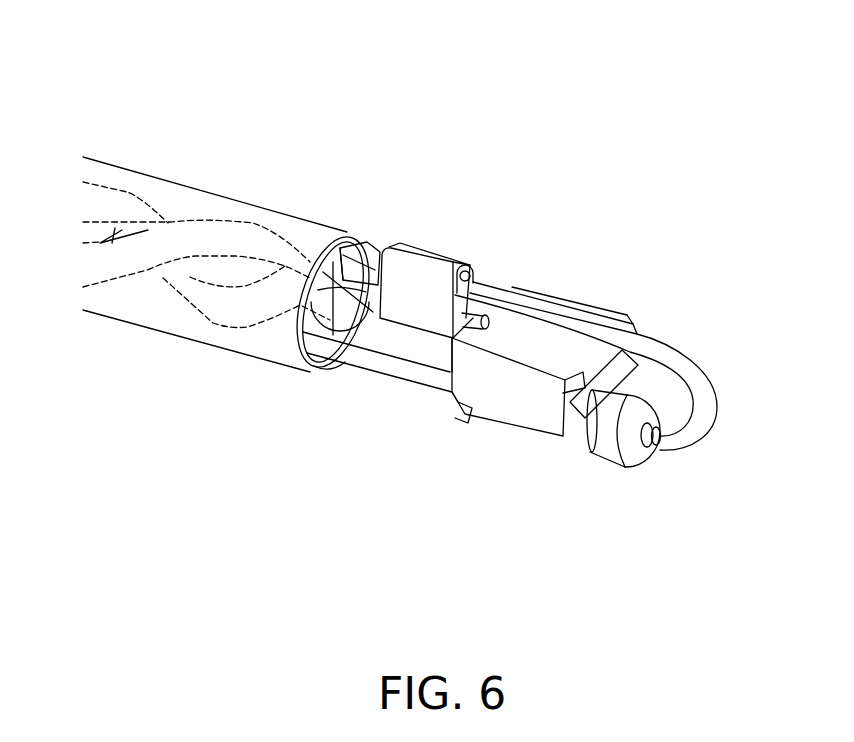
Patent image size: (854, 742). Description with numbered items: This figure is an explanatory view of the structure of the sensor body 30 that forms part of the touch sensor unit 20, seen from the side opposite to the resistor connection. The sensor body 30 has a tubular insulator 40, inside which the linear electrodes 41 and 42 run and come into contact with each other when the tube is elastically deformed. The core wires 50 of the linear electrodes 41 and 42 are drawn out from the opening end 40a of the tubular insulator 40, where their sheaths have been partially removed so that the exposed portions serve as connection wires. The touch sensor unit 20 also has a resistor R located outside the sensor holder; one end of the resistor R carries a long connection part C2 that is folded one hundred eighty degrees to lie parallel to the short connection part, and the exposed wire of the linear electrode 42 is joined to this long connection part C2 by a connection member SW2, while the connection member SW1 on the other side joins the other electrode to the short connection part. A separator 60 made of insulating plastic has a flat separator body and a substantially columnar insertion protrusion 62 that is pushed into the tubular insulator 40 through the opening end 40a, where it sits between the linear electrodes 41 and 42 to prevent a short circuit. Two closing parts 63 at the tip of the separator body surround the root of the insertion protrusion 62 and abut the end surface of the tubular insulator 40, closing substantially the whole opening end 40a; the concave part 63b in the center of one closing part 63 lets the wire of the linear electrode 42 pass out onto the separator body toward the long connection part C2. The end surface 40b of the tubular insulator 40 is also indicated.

The touch sensor unit 20 is at (152, 56).
The sensor body 30 is at (665, 258).
The tubular insulator 40 is at (126, 322).
The opening end 40a is at (332, 245).
The end surface 40b is at (329, 366).
The linear electrode 41 is at (254, 224).
The linear electrode 42 is at (220, 320).
The core wire 50 is at (374, 352).
The separator 60 is at (510, 433).
The insertion protrusion 62 is at (197, 272).
The closing part 63 is at (310, 372).
The concave part 63b is at (370, 257).
The connection member SW1 is at (447, 423).
The connection member SW2 is at (450, 259).
The resistor R is at (627, 467).
The long connection part C2 is at (717, 408).